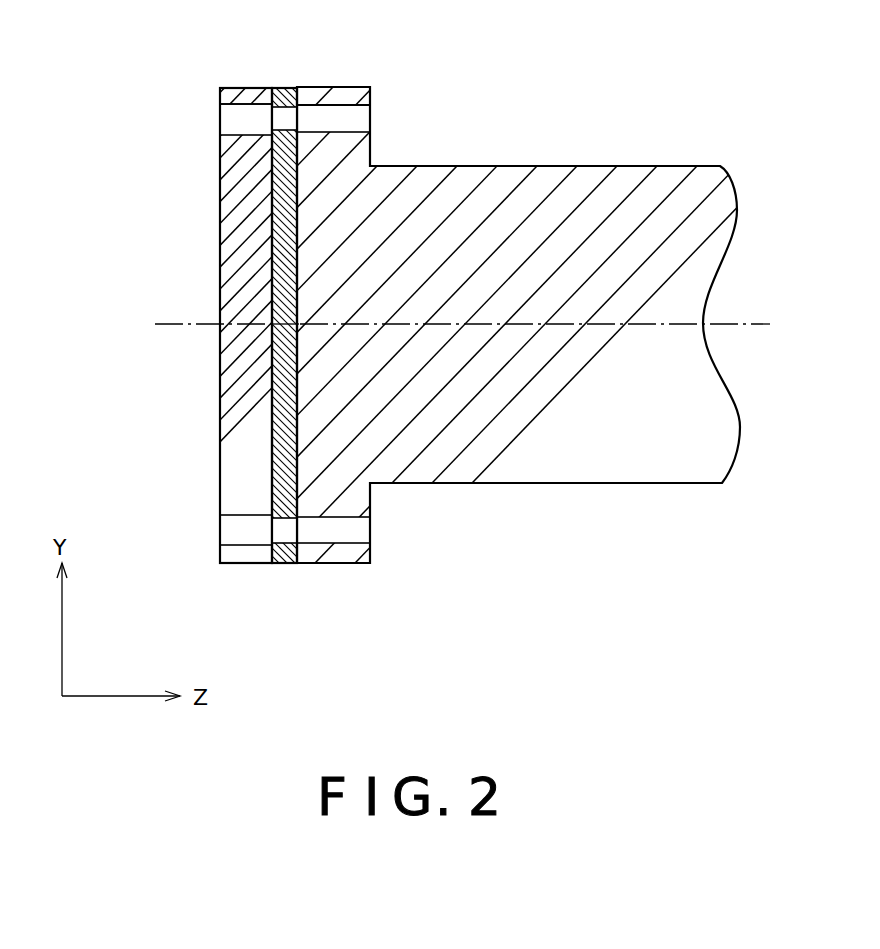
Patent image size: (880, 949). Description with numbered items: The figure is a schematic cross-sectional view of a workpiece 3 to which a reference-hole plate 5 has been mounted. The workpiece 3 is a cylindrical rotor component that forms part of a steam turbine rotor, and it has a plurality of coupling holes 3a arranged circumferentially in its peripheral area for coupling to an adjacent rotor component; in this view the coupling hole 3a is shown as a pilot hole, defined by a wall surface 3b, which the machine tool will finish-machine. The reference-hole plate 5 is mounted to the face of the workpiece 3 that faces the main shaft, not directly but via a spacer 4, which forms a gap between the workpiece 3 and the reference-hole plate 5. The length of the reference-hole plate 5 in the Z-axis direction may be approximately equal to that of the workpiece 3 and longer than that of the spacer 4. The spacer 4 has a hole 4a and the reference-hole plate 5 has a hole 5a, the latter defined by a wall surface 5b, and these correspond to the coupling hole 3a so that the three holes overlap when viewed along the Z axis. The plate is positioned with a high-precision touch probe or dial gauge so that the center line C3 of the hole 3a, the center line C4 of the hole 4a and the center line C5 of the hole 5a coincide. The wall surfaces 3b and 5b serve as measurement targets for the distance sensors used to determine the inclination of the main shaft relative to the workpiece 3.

The workpiece 3 is at (347, 93).
The coupling hole 3a is at (353, 123).
The wall surface 3b is at (352, 112).
The spacer 4 is at (284, 89).
The hole 4a is at (318, 88).
The reference-hole plate 5 is at (242, 93).
The hole 5a is at (232, 122).
The wall surface 5b is at (224, 112).
The center line C3 is at (170, 323).
The center line C4 is at (282, 327).
The center line C5 is at (695, 327).